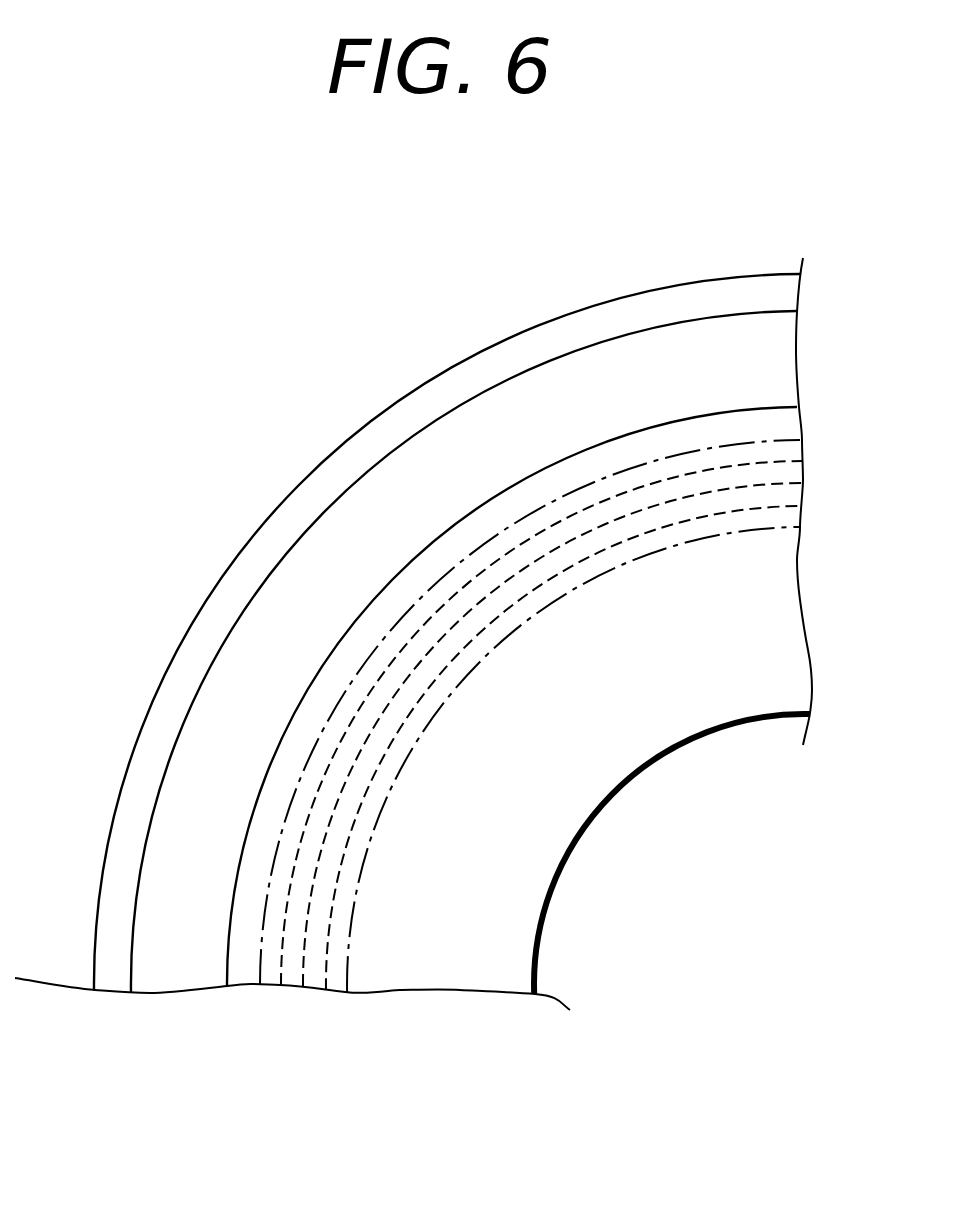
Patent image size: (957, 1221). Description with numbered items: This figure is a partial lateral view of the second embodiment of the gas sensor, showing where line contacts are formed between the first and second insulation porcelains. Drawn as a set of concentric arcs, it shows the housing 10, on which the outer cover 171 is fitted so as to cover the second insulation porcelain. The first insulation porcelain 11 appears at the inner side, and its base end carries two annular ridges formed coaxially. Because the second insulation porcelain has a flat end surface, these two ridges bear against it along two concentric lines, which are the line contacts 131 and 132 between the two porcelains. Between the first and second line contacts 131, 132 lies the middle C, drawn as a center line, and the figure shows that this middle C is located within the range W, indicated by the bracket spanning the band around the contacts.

The housing 10 is at (483, 433).
The first insulation porcelain 11 is at (532, 855).
The outer cover 171 is at (288, 515).
The first line contact 131 is at (262, 921).
The second line contact 132 is at (352, 925).
The middle between the first and second line contacts C is at (306, 923).
The range W is at (806, 461).